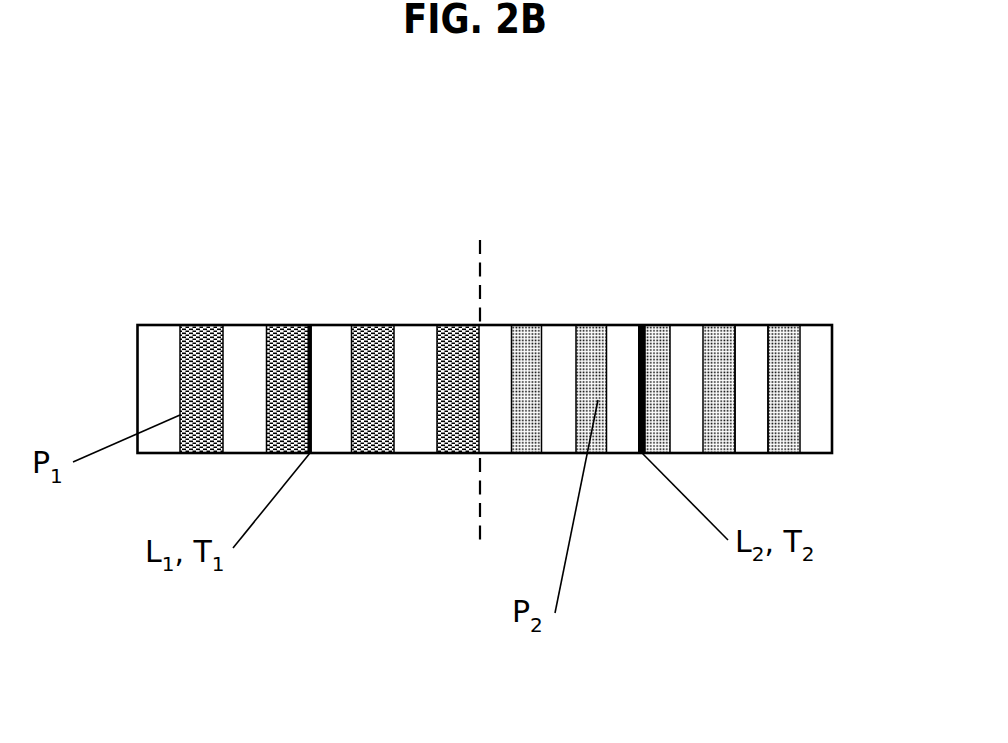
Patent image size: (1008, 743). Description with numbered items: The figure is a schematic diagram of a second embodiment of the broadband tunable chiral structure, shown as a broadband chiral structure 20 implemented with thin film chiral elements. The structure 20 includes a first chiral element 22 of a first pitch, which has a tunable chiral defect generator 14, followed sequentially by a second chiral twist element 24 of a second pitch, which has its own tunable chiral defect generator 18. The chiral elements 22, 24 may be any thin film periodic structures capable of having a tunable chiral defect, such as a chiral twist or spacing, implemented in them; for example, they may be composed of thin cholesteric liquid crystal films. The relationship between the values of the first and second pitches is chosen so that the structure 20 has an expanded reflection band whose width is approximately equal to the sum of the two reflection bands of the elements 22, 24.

The tunable chiral defect generator 14 is at (309, 327).
The tunable chiral defect generator 18 is at (643, 327).
The broadband chiral structure 20 is at (712, 208).
The first chiral element 22 is at (223, 327).
The second chiral twist element 24 is at (748, 327).